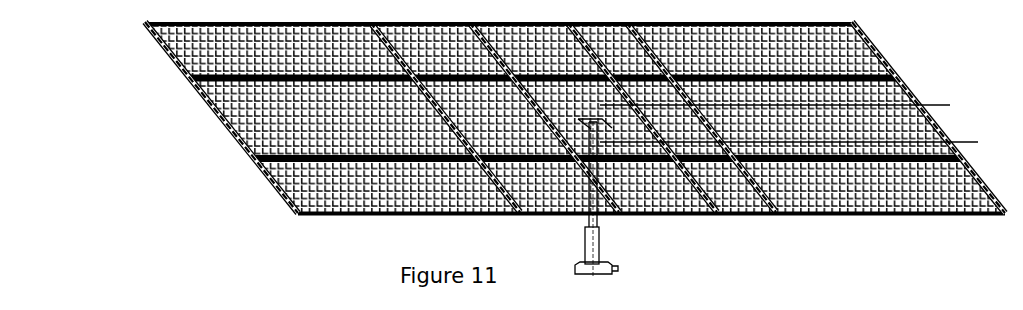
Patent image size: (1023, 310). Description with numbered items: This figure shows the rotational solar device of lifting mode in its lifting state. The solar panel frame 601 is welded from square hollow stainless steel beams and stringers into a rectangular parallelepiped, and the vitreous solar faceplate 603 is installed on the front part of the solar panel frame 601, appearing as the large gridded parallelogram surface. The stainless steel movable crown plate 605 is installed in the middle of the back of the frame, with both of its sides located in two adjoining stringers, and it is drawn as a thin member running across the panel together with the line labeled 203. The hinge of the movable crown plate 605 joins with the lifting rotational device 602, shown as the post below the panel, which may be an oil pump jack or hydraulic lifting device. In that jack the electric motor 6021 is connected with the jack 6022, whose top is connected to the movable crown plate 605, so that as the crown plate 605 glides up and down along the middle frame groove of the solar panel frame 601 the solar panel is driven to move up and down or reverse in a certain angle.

The solar panel frame 601 is at (268, 177).
The solar faceplate 603 is at (853, 53).
The movable crown plate 605 is at (795, 102).
The wire 203 is at (808, 142).
The lifting rotational device 602 is at (680, 198).
The jack 6022 is at (600, 235).
The electric motor 6021 is at (618, 268).